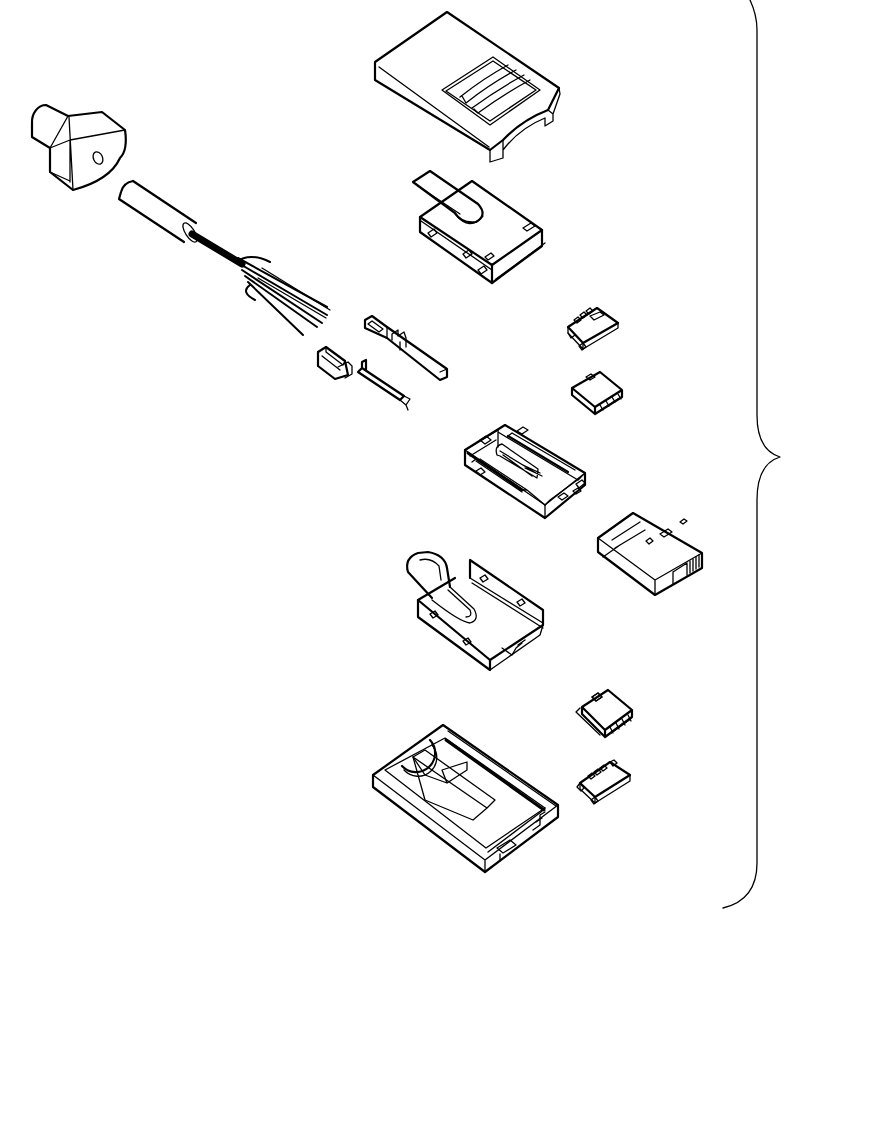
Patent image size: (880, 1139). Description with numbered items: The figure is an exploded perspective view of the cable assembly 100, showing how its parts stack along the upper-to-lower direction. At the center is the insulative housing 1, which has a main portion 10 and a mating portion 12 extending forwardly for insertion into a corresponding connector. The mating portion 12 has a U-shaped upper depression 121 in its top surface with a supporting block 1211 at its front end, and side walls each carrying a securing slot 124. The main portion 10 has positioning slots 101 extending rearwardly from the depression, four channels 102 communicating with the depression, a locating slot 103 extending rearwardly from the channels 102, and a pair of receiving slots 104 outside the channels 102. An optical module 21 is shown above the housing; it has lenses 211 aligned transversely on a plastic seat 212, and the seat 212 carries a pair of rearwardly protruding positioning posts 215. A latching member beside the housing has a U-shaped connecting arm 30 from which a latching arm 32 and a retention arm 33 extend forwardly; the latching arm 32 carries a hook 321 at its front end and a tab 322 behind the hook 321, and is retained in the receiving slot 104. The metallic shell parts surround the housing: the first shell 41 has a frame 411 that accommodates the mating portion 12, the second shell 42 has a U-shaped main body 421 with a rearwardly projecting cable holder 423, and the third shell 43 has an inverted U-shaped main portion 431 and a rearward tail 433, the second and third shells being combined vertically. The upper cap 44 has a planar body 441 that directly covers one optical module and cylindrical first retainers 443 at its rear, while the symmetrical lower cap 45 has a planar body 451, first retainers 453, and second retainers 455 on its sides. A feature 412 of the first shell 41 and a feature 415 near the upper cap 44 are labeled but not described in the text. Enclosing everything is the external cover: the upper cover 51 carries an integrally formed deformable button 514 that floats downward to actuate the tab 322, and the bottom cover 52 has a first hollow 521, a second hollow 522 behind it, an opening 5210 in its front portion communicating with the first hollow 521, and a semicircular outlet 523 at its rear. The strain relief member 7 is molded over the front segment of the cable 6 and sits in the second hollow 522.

The cable assembly 100 is at (780, 457).
The upper cover 51 is at (460, 52).
The deformable button 514 is at (507, 100).
The strain relief member 7 is at (92, 132).
The cable 6 is at (158, 210).
The plastic seat 212 is at (293, 280).
The third shell 43 is at (453, 214).
The inverted U-shaped main portion 431 is at (453, 247).
The tail 433 is at (430, 183).
The upper cap 44 is at (631, 293).
The planar body 441 is at (602, 318).
The first retainers 443 is at (568, 325).
The tab 415 is at (581, 344).
The optical module 21 is at (595, 383).
The positioning posts 215 is at (602, 690).
The lenses 211 is at (632, 710).
The connecting arm 30 is at (318, 362).
The retention arm 33 is at (350, 385).
The latching arm 32 is at (363, 378).
The hook 321 is at (402, 407).
The tab 322 is at (363, 396).
The insulative housing 1 is at (533, 460).
The main portion 10 is at (470, 478).
The mating portion 12 is at (518, 497).
The channels 102 is at (530, 453).
The locating slot 103 is at (490, 440).
The receiving slots 104 is at (484, 482).
The positioning slots 101 is at (540, 462).
The securing slot 124 is at (578, 478).
The supporting block 1211 is at (577, 497).
The upper depression 121 is at (552, 487).
The first shell 41 is at (673, 554).
The openings of front shell 412 is at (677, 537).
The frame 411 is at (677, 575).
The second shell 42 is at (430, 630).
The cable holder 423 is at (417, 573).
The U-shaped main body 421 is at (508, 645).
The lower cap 45 is at (607, 792).
The planar body 451 is at (615, 763).
The first retainers 453 is at (585, 777).
The second retainers 455 is at (593, 797).
The bottom cover 52 is at (424, 814).
The first hollow 521 is at (480, 793).
The second hollow 522 is at (425, 775).
The semicircular shaped outlet 523 is at (410, 762).
The opening 5210 is at (513, 850).